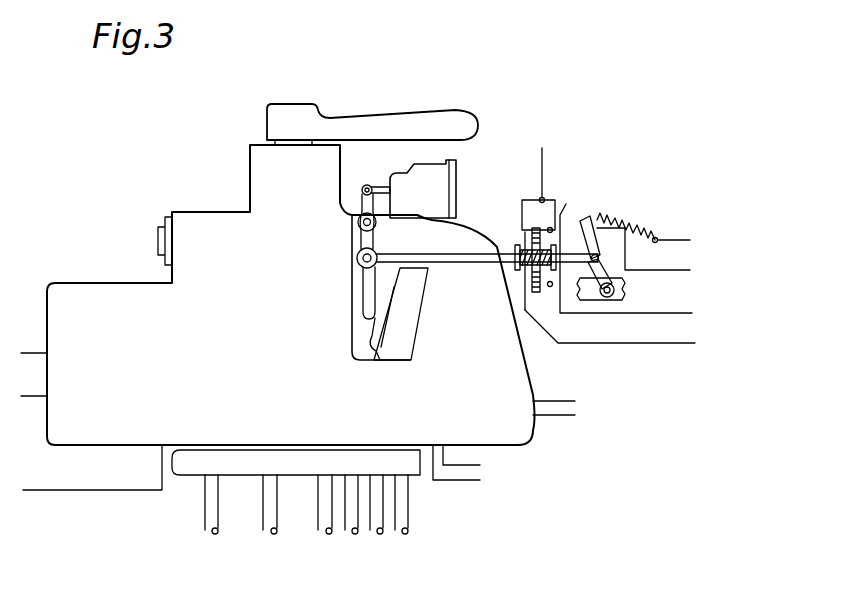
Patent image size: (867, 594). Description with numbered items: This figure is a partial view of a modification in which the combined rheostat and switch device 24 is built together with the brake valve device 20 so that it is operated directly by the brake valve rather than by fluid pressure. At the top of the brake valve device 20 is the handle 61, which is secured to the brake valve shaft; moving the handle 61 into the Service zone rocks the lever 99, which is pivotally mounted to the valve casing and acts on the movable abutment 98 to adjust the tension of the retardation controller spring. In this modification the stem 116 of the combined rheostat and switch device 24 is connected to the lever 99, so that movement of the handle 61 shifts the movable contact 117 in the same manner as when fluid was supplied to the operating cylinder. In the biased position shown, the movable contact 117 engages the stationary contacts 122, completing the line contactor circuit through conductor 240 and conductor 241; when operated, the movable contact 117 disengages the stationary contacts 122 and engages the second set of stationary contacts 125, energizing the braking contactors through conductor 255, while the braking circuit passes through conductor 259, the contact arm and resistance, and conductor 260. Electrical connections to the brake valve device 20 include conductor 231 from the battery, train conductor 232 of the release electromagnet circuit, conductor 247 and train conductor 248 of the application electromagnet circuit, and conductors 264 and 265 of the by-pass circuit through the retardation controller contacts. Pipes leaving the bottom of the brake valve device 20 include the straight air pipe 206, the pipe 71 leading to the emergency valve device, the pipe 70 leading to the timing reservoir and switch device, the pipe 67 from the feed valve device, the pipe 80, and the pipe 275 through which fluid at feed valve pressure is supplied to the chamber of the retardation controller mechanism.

The brake valve device 20 is at (250, 193).
The handle 61 is at (428, 125).
The lever 99 is at (374, 243).
The stem 116 is at (455, 261).
The movable abutment 98 is at (380, 358).
The stationary contacts 122 is at (516, 250).
The movable contact 117 is at (547, 285).
The conductor 240 is at (542, 165).
The second set of stationary contacts 125 is at (552, 228).
The combined rheostat and switch device 24 is at (572, 218).
The conductor 255 is at (692, 315).
The conductor 260 is at (690, 239).
The conductor 259 is at (690, 270).
The conductor 241 is at (695, 343).
The conductor 247 is at (560, 401).
The train conductor 248 is at (563, 415).
The conductor 264 is at (480, 465).
The conductor 265 is at (480, 480).
The conductor 231 is at (40, 353).
The train conductor 232 is at (33, 396).
The straight air pipe 206 is at (206, 526).
The pipe 71 is at (264, 525).
The pipe 70 is at (319, 525).
The pipe 67 is at (352, 531).
The pipe 80 is at (379, 532).
The pipe 275 is at (409, 530).